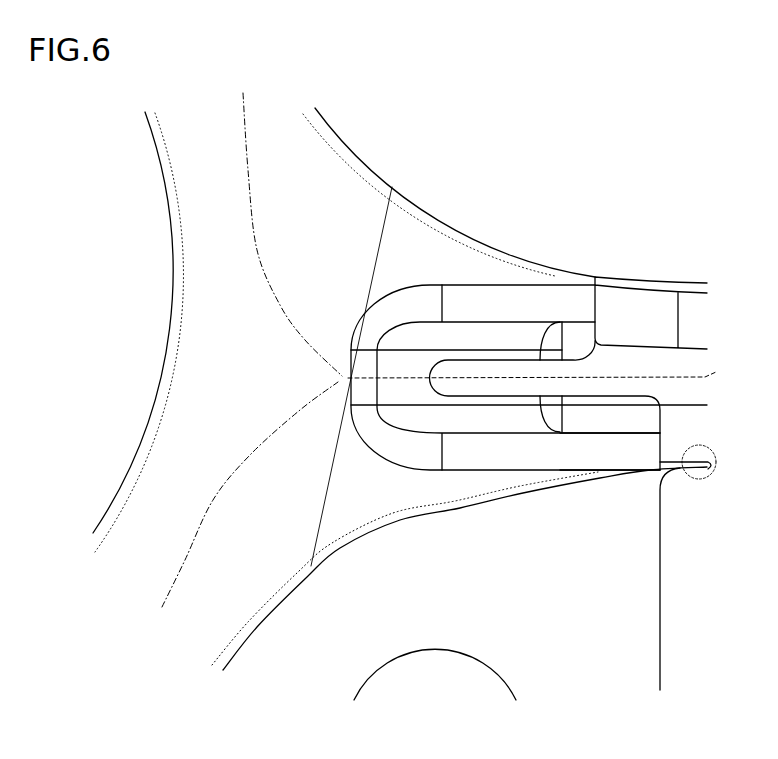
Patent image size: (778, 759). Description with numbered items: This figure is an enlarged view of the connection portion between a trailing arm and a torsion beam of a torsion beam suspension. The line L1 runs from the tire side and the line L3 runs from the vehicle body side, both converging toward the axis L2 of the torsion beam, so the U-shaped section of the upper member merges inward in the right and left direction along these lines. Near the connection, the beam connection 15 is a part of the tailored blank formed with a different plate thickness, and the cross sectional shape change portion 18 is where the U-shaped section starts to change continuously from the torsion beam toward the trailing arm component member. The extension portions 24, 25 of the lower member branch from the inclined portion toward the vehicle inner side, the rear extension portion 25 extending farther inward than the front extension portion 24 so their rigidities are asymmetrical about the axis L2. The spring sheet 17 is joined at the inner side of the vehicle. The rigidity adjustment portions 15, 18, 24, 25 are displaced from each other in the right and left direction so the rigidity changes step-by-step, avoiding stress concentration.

The beam connection 15 is at (400, 192).
The spring sheet 17 is at (650, 642).
The cross sectional shape change portion 18 is at (690, 478).
The extension portion 24 is at (575, 337).
The extension portion 25 is at (616, 447).
The line L1 is at (238, 511).
The axis L2 is at (547, 383).
The line L3 is at (290, 222).